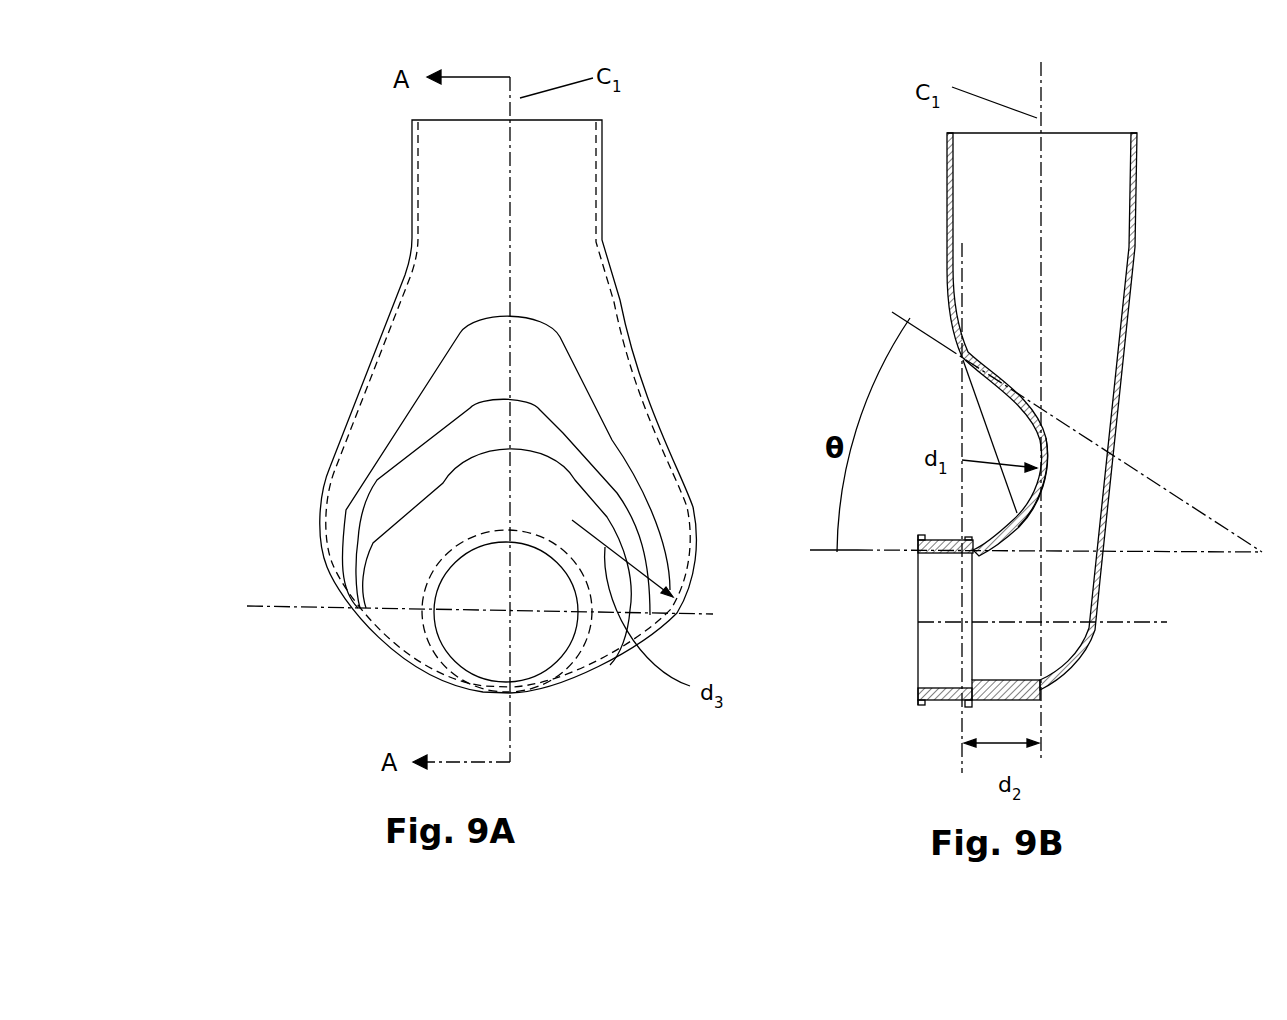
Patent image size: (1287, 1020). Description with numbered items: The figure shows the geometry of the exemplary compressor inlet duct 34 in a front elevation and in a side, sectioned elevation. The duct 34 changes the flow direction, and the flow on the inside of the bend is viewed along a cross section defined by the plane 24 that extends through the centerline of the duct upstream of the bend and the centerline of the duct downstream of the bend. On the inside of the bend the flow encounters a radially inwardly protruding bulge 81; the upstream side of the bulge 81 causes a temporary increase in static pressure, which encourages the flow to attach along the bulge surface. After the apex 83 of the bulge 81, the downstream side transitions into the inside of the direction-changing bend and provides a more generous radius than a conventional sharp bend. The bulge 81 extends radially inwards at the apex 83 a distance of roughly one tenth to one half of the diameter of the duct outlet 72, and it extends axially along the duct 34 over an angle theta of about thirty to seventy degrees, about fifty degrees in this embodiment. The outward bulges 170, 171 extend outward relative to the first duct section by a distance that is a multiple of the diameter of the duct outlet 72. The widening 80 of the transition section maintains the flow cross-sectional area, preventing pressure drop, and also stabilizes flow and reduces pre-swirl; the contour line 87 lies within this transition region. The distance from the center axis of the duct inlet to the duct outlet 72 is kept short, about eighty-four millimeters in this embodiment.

In FIG. 9A, the compressor inlet duct 34 is at (417, 183).
In FIG. 9B, the compressor inlet duct 34 is at (948, 175).
In FIG. 9A, the widening of the transition section 80 is at (435, 437).
In FIG. 9A, the inner contour surface 87 is at (437, 487).
In FIG. 9A, the outward bulge 170 is at (313, 522).
In FIG. 9A, the outward bulge 171 is at (697, 520).
In FIG. 9A, the cross-section plane 24 is at (258, 601).
In FIG. 9B, the cross-section plane 24 is at (1137, 630).
In FIG. 9A, the duct outlet 72 is at (433, 633).
In FIG. 9B, the duct outlet 72 is at (967, 587).
In FIG. 9B, the bulge 81 is at (977, 360).
In FIG. 9B, the apex 83 is at (1040, 470).